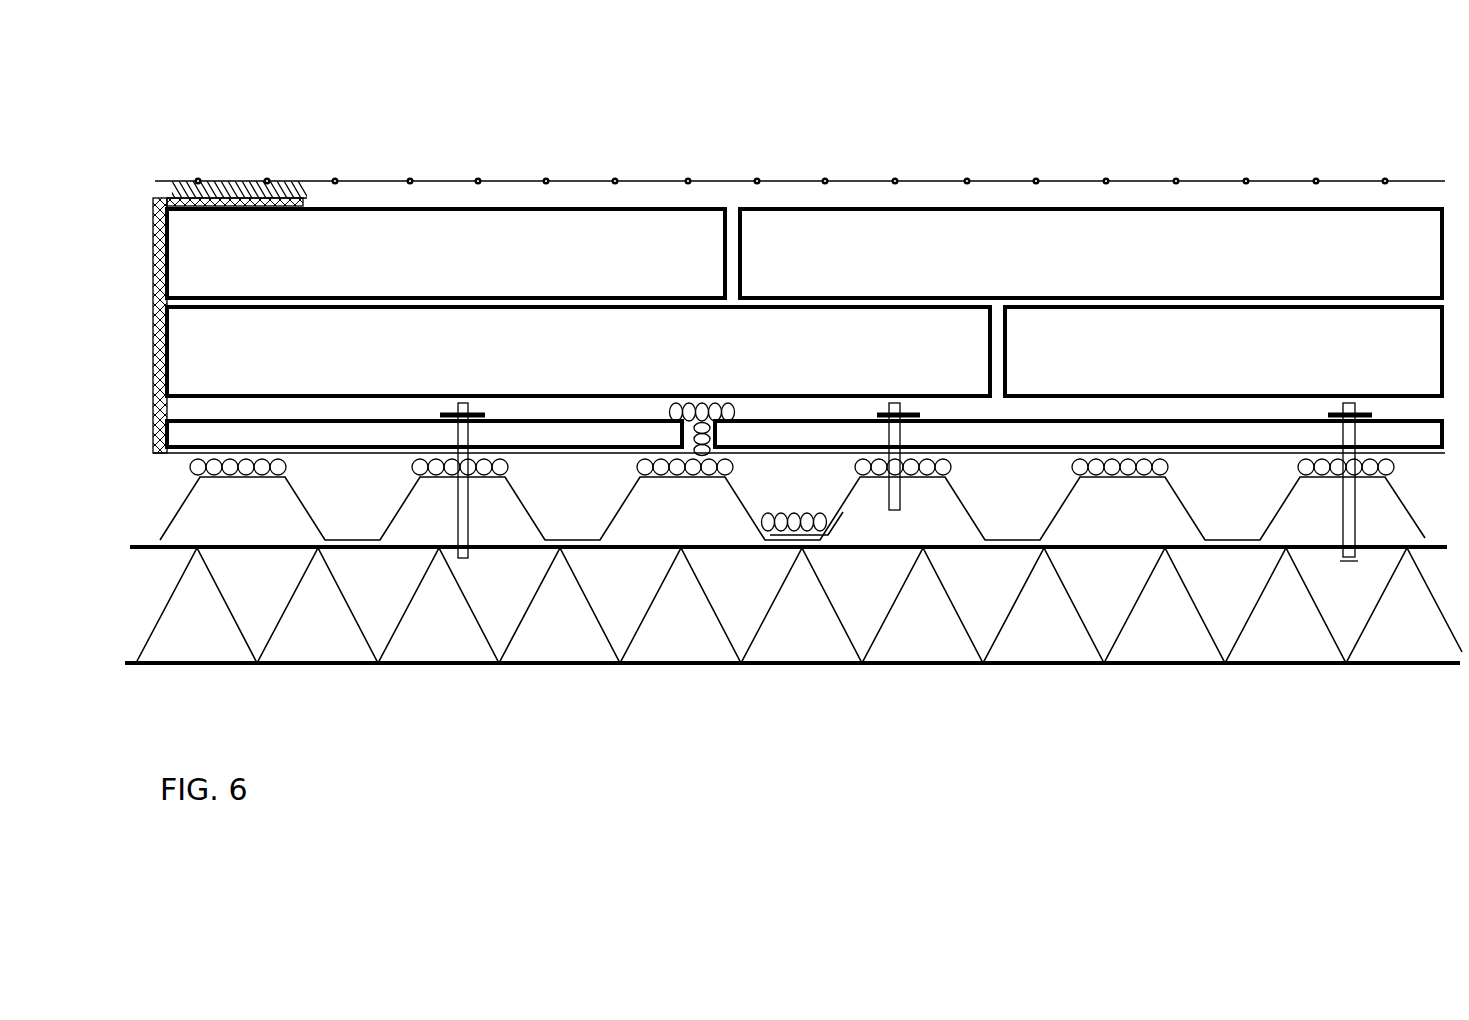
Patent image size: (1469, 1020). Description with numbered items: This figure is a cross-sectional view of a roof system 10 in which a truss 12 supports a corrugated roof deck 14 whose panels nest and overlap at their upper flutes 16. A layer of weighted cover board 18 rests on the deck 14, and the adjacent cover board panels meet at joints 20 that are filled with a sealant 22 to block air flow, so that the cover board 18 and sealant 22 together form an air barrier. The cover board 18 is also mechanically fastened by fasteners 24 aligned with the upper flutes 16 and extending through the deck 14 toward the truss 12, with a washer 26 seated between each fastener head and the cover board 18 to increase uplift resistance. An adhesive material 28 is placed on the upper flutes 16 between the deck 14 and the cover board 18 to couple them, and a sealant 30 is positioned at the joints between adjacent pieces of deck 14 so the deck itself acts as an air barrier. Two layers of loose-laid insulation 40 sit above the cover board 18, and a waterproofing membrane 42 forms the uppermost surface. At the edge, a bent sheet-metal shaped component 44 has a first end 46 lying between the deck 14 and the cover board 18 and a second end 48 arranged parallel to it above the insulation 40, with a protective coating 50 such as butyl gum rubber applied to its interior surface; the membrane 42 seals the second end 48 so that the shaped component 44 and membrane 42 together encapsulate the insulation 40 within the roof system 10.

The roof system 10 is at (249, 88).
The truss 12 is at (728, 622).
The roof deck 14 is at (1062, 493).
The upper flutes 16 is at (505, 490).
The weighted cover board 18 is at (240, 437).
The joints 20 is at (722, 389).
The sealant 22 is at (684, 405).
The fasteners 24 is at (464, 435).
The washer 26 is at (445, 410).
The adhesive material 28 is at (1322, 463).
The sealant 30 is at (792, 513).
The insulation 40 is at (578, 340).
The waterproofing membrane 42 is at (788, 183).
The shaped component 44 is at (156, 183).
The first end 46 is at (353, 457).
The second end 48 is at (273, 196).
The protective coating 50 is at (153, 291).